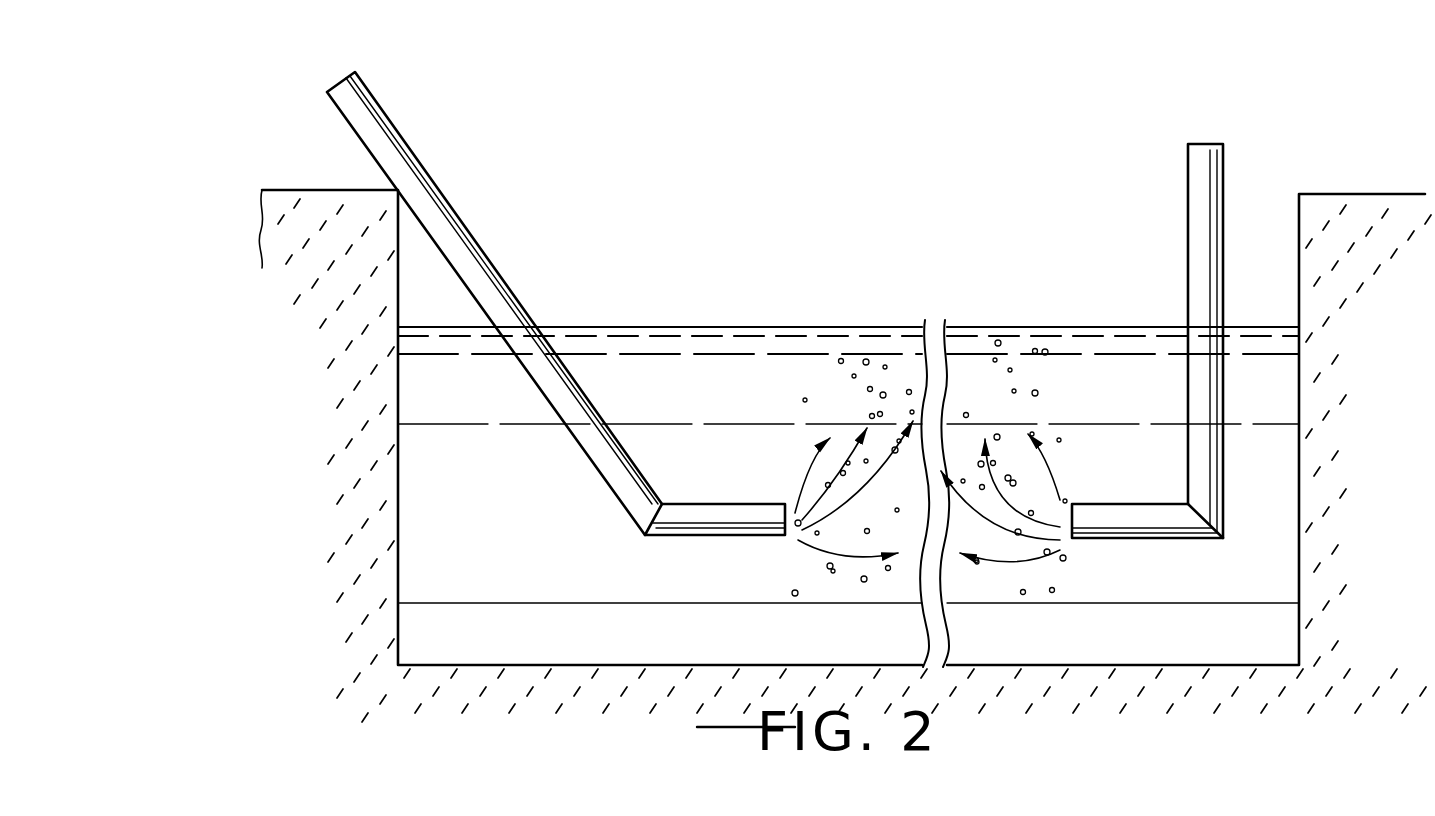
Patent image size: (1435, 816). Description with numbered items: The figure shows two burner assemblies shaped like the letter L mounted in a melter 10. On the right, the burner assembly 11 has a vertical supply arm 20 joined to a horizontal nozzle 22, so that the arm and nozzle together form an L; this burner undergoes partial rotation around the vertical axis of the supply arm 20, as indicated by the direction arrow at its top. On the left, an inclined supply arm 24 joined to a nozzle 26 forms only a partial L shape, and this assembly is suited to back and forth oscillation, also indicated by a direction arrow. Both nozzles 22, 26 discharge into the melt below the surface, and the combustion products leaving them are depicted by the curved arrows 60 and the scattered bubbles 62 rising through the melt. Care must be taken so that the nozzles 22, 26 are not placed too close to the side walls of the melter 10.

The melter 10 is at (300, 447).
The burner assembly 11 is at (357, 146).
The supply arm 20 is at (1188, 210).
The nozzle 22 is at (1137, 540).
The supply arm 24 is at (480, 240).
The nozzle 26 is at (702, 535).
The arrows 60 is at (826, 462).
The bubbles 62 is at (895, 394).